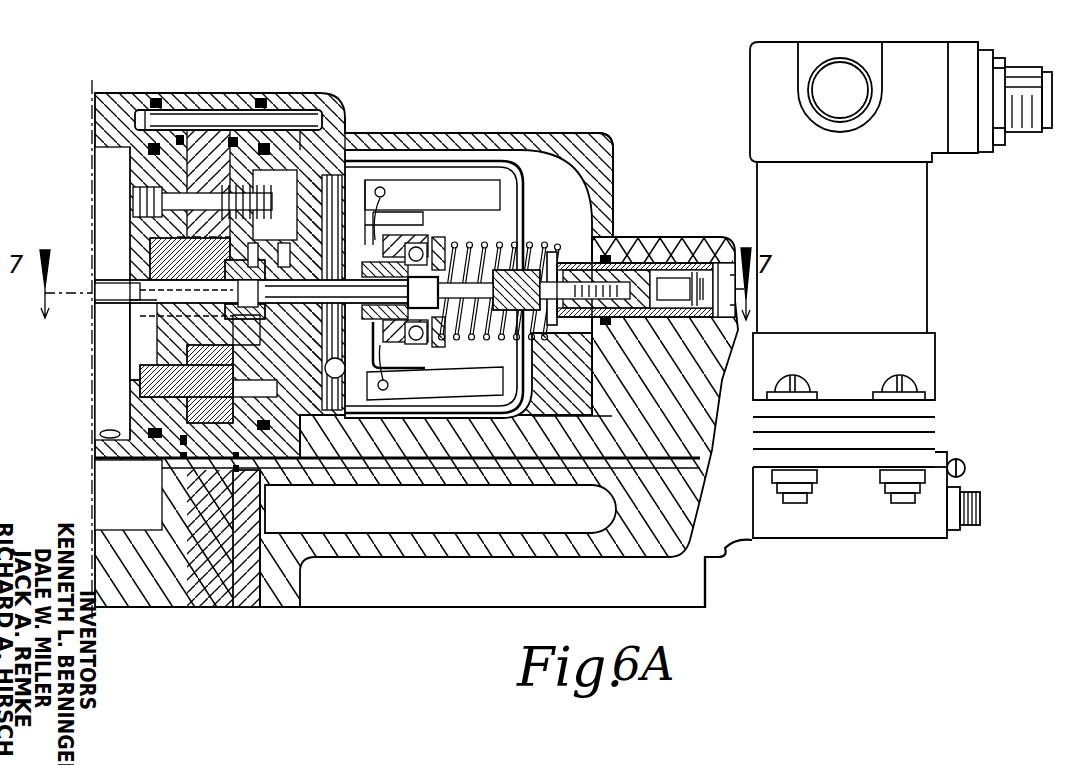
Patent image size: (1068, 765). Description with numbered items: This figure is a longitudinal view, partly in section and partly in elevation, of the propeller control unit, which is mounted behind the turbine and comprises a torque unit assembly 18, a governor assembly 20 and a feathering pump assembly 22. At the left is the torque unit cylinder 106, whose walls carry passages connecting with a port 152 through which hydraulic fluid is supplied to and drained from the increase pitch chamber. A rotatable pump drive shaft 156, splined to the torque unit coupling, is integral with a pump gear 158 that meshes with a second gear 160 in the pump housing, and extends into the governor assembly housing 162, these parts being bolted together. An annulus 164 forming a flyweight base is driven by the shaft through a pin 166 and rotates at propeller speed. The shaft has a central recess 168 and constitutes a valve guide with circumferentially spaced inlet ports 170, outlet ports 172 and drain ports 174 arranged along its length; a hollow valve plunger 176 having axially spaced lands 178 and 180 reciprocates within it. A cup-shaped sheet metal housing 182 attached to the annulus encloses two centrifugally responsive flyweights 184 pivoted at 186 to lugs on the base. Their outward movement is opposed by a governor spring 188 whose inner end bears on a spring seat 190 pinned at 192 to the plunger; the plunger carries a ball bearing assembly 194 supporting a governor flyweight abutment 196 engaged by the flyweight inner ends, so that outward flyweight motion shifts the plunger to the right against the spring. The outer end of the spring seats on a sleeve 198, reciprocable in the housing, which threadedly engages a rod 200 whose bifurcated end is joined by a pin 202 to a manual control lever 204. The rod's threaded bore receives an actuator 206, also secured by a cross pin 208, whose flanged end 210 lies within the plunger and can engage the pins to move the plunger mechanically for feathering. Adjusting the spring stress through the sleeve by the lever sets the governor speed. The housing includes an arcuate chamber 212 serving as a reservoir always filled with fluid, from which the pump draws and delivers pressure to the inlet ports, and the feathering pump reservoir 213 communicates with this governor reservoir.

The torque unit assembly 18 is at (125, 608).
The governor assembly 20 is at (707, 586).
The feathering pump assembly 22 is at (919, 226).
The torque unit cylinder 106 is at (119, 104).
The port 152 is at (100, 433).
The pump drive shaft 156 is at (97, 314).
The pump gear 158 is at (150, 242).
The second gear 160 is at (183, 405).
The governor assembly housing 162 is at (604, 150).
The annulus 164 is at (335, 180).
The pin 166 is at (352, 180).
The central recess 168 is at (143, 307).
The inlet ports 170 is at (254, 262).
The outlet ports 172 is at (244, 333).
The drain ports 174 is at (402, 388).
The hollow valve plunger 176 is at (401, 212).
The land 178 is at (235, 302).
The land 180 is at (343, 381).
The cup-shaped sheet metal housing 182 is at (527, 363).
The flyweights 184 is at (386, 185).
The pivot 186 is at (387, 191).
The governor spring 188 is at (576, 268).
The spring seat 190 is at (432, 195).
The pins 192 is at (466, 325).
The ball bearing assembly 194 is at (425, 332).
The governor flyweight abutment 196 is at (435, 361).
The sleeve 198 is at (660, 262).
The rod 200 is at (660, 288).
The pin 202 is at (702, 317).
The manual control lever 204 is at (702, 321).
The actuator 206 is at (524, 280).
The cross pin 208 is at (612, 270).
The flanged end 210 is at (440, 247).
The arcuate chamber 212 is at (530, 163).
The feathering pump reservoir 213 is at (541, 520).